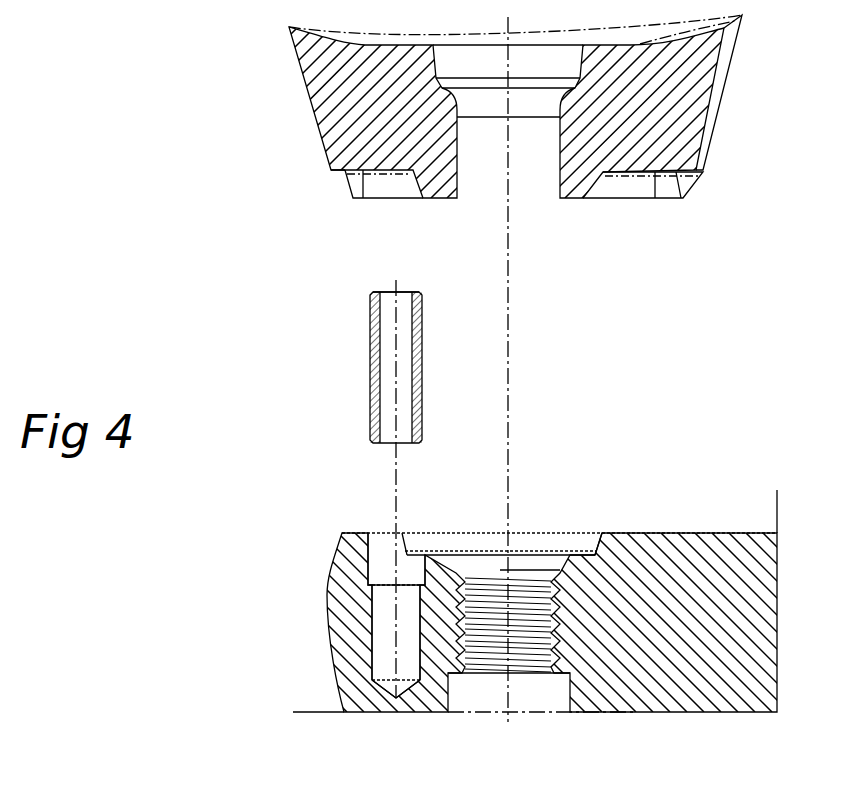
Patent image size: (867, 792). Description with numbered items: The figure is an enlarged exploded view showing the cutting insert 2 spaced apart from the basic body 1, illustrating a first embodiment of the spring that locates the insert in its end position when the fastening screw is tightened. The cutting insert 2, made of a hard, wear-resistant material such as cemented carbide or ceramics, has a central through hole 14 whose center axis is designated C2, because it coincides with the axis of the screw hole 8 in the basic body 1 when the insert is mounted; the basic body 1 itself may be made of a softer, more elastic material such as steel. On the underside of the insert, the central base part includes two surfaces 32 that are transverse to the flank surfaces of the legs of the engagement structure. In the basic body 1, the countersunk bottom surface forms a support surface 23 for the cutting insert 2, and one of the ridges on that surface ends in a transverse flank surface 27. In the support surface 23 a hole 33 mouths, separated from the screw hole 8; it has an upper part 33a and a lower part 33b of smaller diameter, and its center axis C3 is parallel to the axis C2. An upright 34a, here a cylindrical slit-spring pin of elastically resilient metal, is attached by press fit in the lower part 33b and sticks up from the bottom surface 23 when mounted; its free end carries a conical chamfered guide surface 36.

The basic body 1 is at (279, 695).
The cutting insert 2 is at (283, 119).
The hole 8 is at (523, 603).
The through hole 14 is at (532, 182).
The support surface 23 is at (433, 553).
The transverse flank surface 27 is at (592, 548).
The transverse surfaces 32 is at (417, 184).
The hole 33 is at (388, 685).
The upper part 33a is at (373, 548).
The lower part 33b is at (377, 628).
The upright 34a is at (372, 367).
The chamfered guide surface 36 is at (418, 292).
The center axis C2 is at (512, 318).
The center axis C3 is at (395, 472).